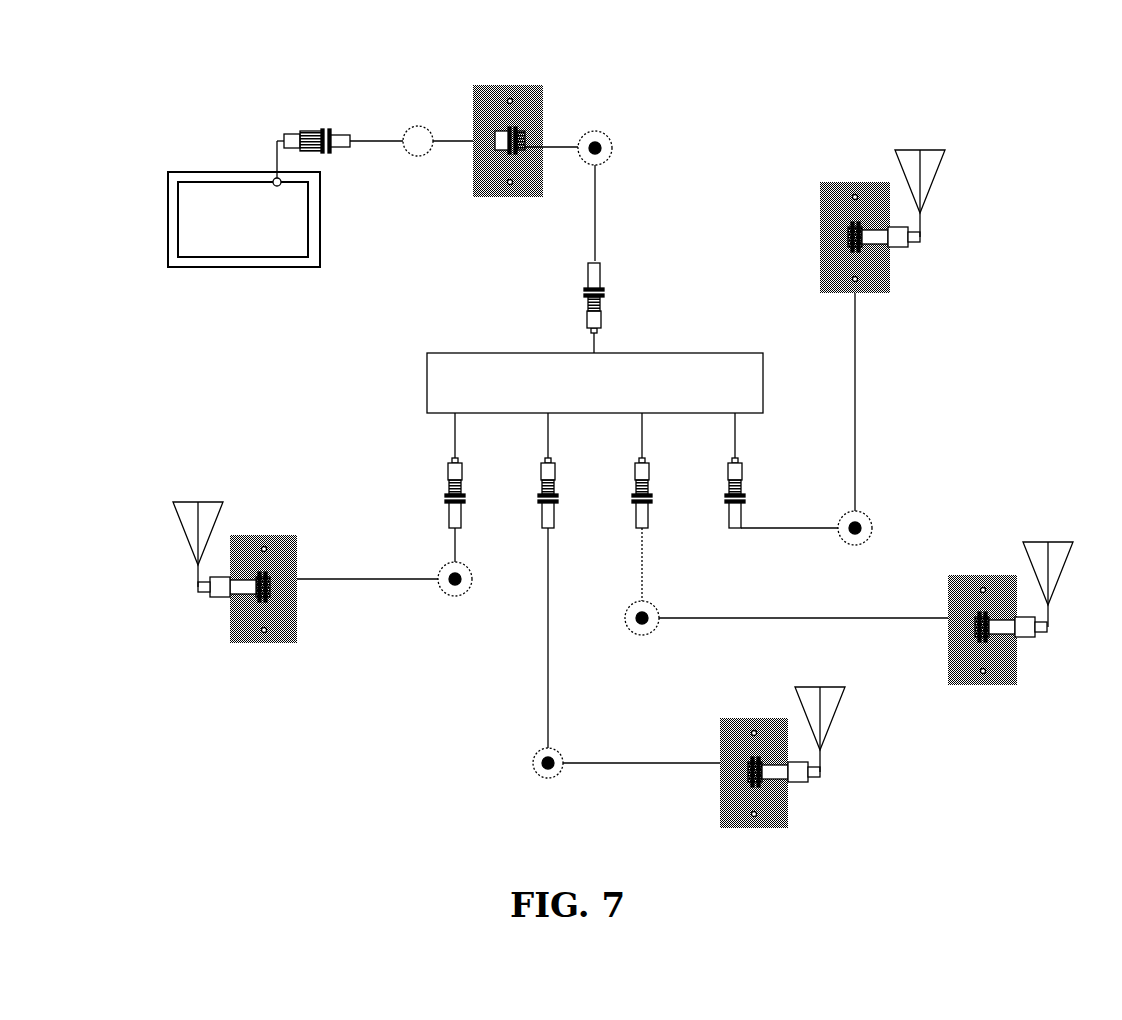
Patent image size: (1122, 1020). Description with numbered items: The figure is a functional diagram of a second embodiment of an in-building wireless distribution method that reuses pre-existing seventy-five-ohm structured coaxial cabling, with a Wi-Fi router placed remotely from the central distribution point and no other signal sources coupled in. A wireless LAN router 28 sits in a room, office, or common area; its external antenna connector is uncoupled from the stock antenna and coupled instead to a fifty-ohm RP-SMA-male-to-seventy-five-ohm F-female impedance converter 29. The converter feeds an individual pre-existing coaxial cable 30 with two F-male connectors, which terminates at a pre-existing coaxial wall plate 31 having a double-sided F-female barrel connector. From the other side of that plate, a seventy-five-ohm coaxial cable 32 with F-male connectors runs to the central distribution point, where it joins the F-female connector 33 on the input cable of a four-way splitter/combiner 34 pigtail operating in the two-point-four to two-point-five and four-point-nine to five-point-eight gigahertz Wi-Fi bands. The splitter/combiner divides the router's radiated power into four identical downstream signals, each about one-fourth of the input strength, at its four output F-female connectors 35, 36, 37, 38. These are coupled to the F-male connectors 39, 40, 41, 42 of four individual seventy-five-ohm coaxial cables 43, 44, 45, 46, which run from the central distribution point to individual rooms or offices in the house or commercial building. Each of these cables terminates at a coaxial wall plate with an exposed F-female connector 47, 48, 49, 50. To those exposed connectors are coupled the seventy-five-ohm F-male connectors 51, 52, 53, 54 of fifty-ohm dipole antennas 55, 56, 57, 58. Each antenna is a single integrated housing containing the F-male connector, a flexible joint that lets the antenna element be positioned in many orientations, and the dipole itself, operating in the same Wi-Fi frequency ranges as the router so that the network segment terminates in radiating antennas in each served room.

The wireless LAN router 28 is at (166, 214).
The impedance converter 29 is at (318, 128).
The RG-6 cable 30 is at (417, 122).
The coaxial wall plate 31 is at (517, 86).
The RG-6 cable 32 is at (612, 136).
The F-female connector 33 is at (614, 302).
The 4-way splitter/combiner 34 is at (424, 386).
The output F-female connector 35 is at (448, 441).
The output F-female connector 36 is at (541, 441).
The output F-female connector 37 is at (635, 441).
The output F-female connector 38 is at (728, 441).
The F-male connector 39 is at (445, 512).
The F-male connector 40 is at (539, 512).
The F-male connector 41 is at (633, 512).
The F-male connector 42 is at (726, 512).
The RG-6 cable 43 is at (398, 592).
The RG-6 cable 44 is at (530, 764).
The RG-6 cable 45 is at (670, 634).
The RG-6 cable 46 is at (838, 544).
The coaxial wall plate with F-female connector 47 is at (289, 531).
The coaxial wall plate with F-female connector 48 is at (718, 714).
The coaxial wall plate with F-female connector 49 is at (960, 566).
The coaxial wall plate with F-female connector 50 is at (819, 178).
The F-male connector 51 is at (219, 607).
The F-male connector 52 is at (822, 791).
The F-male connector 53 is at (1044, 651).
The F-male connector 54 is at (908, 254).
The dipole antenna 55 is at (196, 498).
The dipole antenna 56 is at (840, 684).
The dipole antenna 57 is at (1040, 539).
The dipole antenna 58 is at (914, 140).